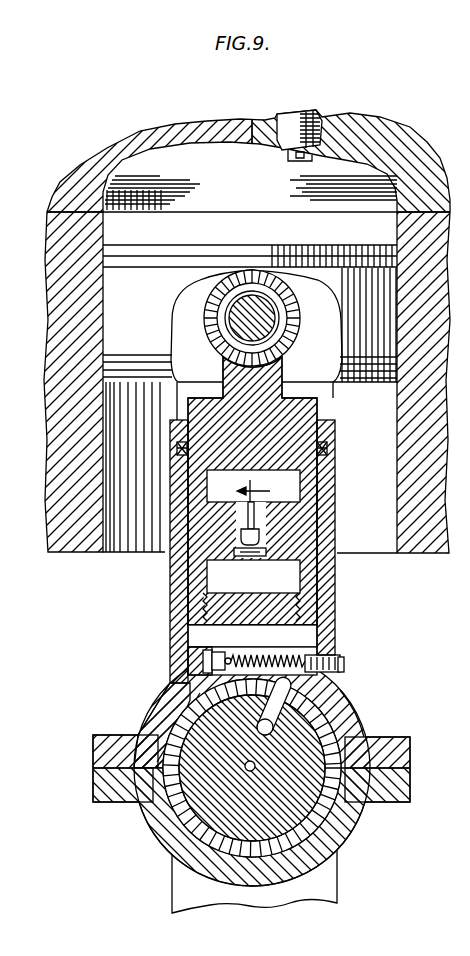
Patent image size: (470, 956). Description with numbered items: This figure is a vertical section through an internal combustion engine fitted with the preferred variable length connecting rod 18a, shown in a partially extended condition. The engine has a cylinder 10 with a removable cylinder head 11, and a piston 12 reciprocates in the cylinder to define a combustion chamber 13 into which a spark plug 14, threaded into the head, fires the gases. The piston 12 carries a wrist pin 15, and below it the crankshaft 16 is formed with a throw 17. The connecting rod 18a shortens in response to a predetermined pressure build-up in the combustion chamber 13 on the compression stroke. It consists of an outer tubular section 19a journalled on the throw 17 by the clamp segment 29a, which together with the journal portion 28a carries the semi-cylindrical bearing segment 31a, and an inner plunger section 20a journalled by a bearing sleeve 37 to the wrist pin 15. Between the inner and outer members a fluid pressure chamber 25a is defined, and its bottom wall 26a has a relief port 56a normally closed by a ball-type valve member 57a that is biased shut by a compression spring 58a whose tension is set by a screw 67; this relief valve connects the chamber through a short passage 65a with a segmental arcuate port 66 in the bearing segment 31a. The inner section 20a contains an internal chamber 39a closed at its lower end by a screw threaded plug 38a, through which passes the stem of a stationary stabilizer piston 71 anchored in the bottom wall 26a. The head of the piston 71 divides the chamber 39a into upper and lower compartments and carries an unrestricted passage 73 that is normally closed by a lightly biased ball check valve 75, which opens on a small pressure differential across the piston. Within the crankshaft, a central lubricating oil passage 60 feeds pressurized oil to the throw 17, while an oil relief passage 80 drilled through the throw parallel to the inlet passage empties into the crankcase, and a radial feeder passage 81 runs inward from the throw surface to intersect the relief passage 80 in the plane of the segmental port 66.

The cylinder 10 is at (418, 542).
The cylinder head 11 is at (187, 133).
The piston 12 is at (163, 253).
The combustion chamber 13 is at (252, 195).
The spark plug 14 is at (288, 122).
The wrist pin 15 is at (262, 313).
The crankshaft 16 is at (320, 880).
The throw 17 is at (307, 742).
The variable length connecting rod 18a is at (392, 604).
The outer tubular section 19a is at (335, 477).
The inner plunger section 20a is at (300, 394).
The fluid pressure chamber 25a is at (264, 645).
The bottom wall 26a is at (208, 648).
The journal portion 28a is at (135, 742).
The clamp segment 29a is at (333, 825).
The bearing segment 31a is at (330, 755).
The bearing sleeve 37 is at (273, 333).
The screw threaded plug 38a is at (203, 598).
The internal chamber 39a is at (290, 570).
The relief port 56a is at (205, 658).
The ball-type valve member 57a is at (210, 667).
The compression spring 58a is at (280, 652).
The lubricating oil passage 60 is at (252, 772).
The short passage 65a is at (343, 670).
The segmental arcuate port 66 is at (197, 700).
The screw 67 is at (340, 658).
The stationary stabilizer piston 71 is at (280, 538).
The unrestricted passage 73 is at (247, 513).
The ball check valve 75 is at (243, 533).
The oil relief passage 80 is at (258, 728).
The radial feeder passage 81 is at (273, 708).